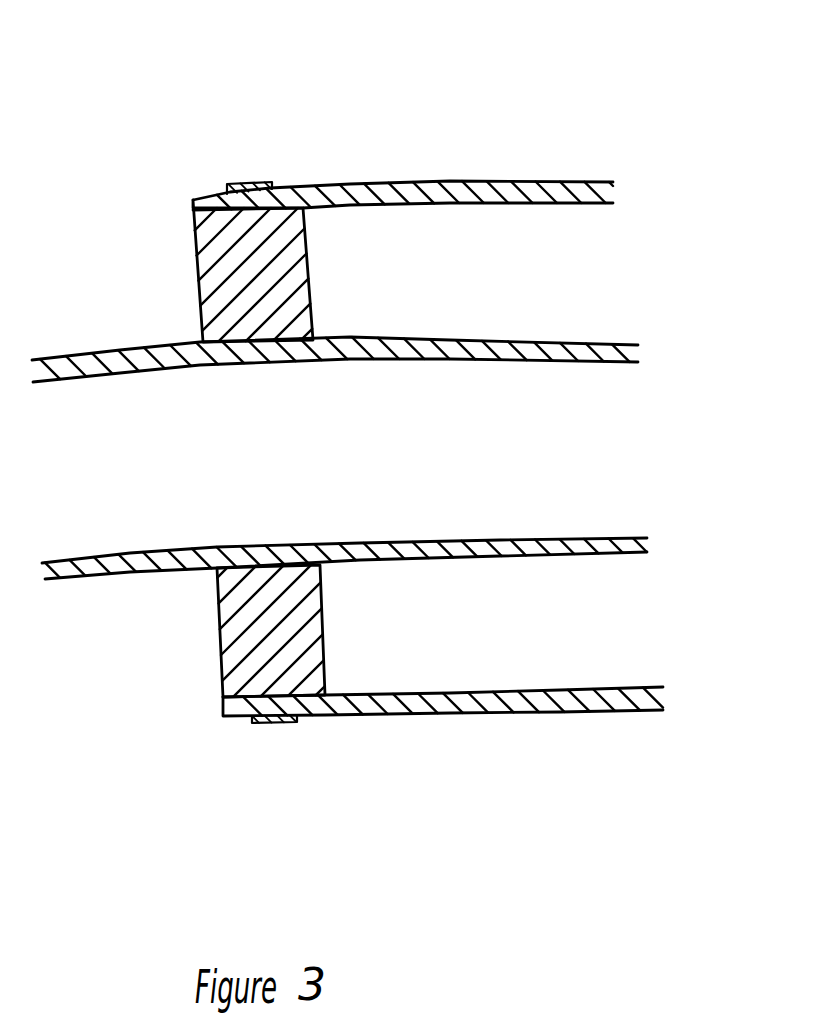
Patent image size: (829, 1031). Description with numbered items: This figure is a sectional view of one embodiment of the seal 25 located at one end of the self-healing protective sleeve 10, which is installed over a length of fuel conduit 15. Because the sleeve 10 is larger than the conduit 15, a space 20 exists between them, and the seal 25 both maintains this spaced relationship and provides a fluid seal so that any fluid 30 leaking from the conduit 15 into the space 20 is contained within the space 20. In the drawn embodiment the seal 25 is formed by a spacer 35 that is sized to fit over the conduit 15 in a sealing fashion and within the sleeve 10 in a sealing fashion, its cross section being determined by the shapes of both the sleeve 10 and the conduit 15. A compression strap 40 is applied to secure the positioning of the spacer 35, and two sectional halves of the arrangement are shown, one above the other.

The sleeve 10 is at (488, 185).
The conduit 15 is at (575, 345).
The space 20 is at (574, 267).
The seal 25 is at (154, 92).
The fluid 30 is at (580, 470).
The spacer 35 is at (197, 267).
The compression strap 40 is at (250, 183).